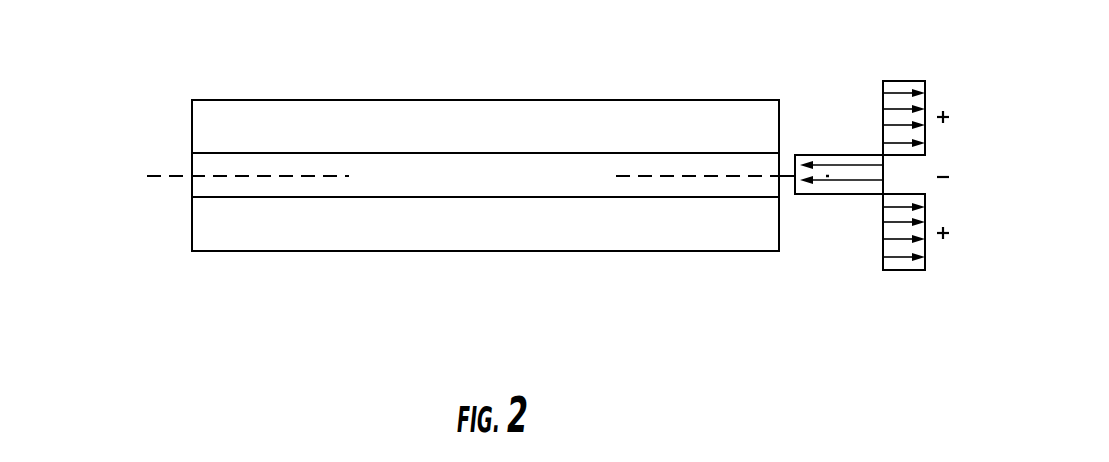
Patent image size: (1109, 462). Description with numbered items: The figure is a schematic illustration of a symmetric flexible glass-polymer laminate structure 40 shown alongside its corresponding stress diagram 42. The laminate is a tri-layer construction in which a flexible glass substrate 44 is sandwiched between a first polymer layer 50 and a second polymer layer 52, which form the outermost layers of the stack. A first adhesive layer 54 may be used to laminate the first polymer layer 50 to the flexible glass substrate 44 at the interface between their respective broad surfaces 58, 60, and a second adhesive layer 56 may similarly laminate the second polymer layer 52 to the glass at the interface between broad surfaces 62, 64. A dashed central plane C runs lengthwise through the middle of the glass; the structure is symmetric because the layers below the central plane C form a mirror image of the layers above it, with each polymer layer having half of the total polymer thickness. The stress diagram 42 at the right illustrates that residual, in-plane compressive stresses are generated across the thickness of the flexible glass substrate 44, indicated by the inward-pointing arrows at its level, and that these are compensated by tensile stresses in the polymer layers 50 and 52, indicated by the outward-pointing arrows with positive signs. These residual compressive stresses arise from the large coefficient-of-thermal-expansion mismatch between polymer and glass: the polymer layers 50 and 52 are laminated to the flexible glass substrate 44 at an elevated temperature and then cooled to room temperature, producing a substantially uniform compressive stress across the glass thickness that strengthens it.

The flexible glass-polymer laminate structure 40 is at (590, 50).
The stress diagram 42 is at (875, 49).
The flexible glass substrate 44 is at (211, 165).
The first polymer layer 50 is at (171, 118).
The second polymer layer 52 is at (178, 230).
The adhesive layer 54 is at (248, 153).
The adhesive layer 56 is at (308, 197).
The broad surface 58 is at (331, 153).
The broad surface 60 is at (289, 153).
The broad surface 62 is at (670, 197).
The broad surface 64 is at (703, 198).
The central plane C is at (160, 178).